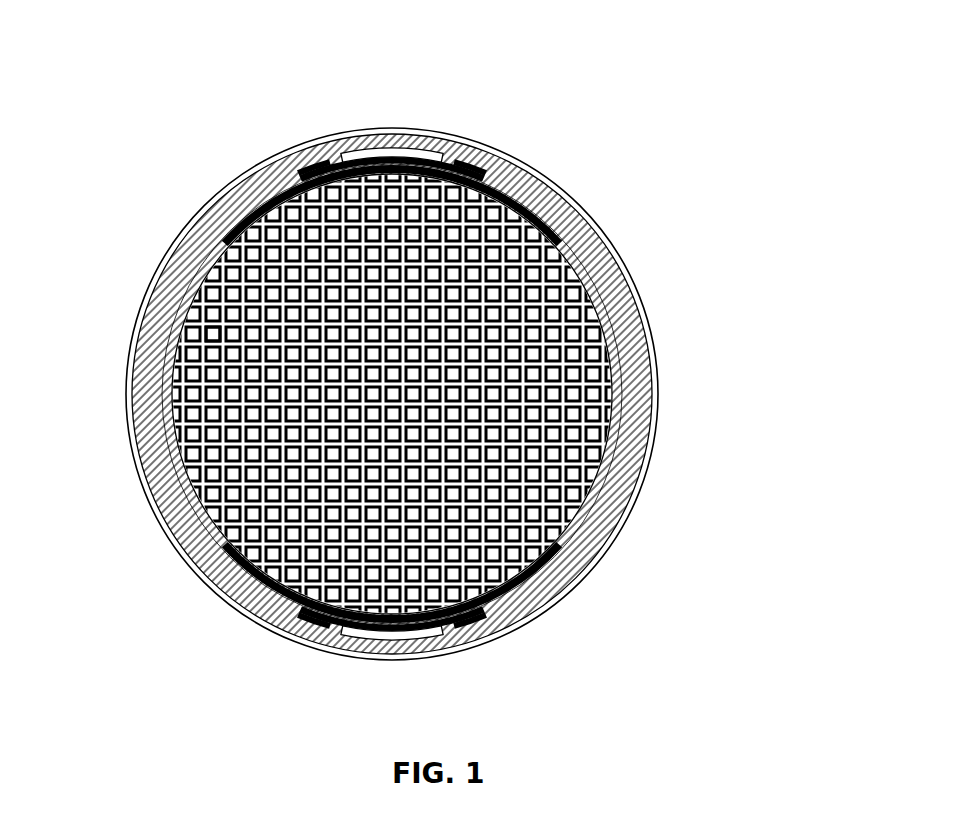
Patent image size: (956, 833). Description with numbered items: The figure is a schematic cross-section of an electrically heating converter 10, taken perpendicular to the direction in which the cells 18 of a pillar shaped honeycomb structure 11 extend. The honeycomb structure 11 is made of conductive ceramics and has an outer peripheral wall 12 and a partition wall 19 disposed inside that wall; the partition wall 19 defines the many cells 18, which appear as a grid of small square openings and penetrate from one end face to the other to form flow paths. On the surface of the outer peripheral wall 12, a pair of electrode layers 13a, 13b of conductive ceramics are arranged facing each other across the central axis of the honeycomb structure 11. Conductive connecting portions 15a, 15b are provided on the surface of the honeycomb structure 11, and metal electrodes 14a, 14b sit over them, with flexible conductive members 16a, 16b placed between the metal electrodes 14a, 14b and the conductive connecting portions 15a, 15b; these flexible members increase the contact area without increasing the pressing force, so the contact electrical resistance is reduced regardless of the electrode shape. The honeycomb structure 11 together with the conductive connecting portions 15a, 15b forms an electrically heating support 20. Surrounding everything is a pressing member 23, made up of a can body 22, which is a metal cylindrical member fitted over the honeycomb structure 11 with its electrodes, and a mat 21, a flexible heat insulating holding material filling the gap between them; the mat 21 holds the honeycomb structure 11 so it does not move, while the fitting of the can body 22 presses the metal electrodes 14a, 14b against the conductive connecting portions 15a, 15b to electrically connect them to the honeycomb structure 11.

The electrically heating converter 10 is at (433, 92).
The pillar shaped honeycomb structure 11 is at (171, 474).
The outer peripheral wall 12 is at (165, 393).
The electrode layer 13a is at (223, 237).
The electrode layer 13b is at (225, 553).
The metal electrode 14a is at (373, 147).
The metal electrode 14b is at (402, 640).
The conductive connecting portion 15a is at (317, 173).
The conductive connecting portion 15b is at (320, 623).
The flexible conductive member 16a is at (460, 160).
The flexible conductive member 16b is at (458, 627).
The cell 18 is at (210, 333).
The partition wall 19 is at (237, 305).
The electrically heating support 20 is at (558, 210).
The mat 21 is at (635, 328).
The can body 22 is at (643, 297).
The pressing member 23 is at (474, 394).